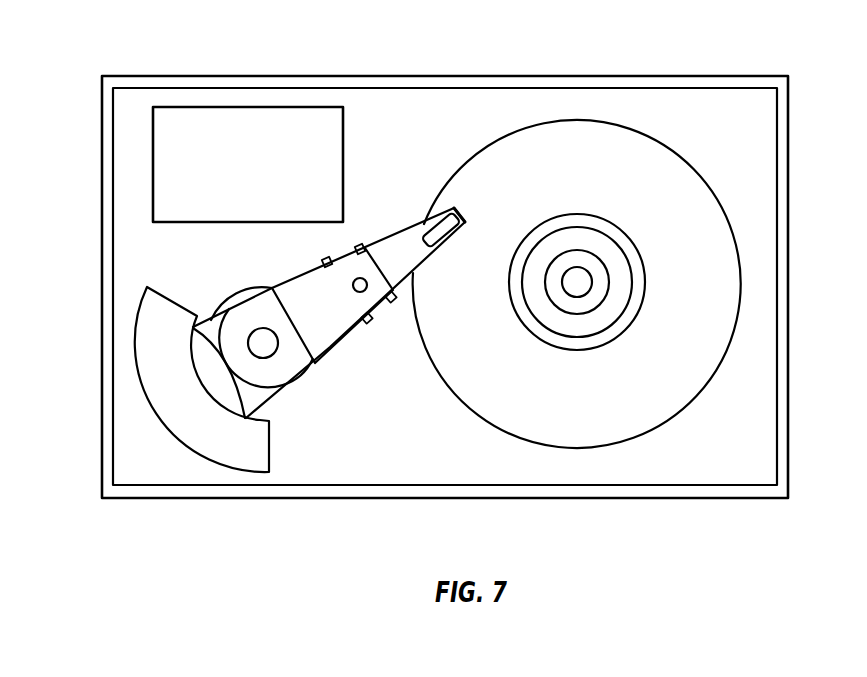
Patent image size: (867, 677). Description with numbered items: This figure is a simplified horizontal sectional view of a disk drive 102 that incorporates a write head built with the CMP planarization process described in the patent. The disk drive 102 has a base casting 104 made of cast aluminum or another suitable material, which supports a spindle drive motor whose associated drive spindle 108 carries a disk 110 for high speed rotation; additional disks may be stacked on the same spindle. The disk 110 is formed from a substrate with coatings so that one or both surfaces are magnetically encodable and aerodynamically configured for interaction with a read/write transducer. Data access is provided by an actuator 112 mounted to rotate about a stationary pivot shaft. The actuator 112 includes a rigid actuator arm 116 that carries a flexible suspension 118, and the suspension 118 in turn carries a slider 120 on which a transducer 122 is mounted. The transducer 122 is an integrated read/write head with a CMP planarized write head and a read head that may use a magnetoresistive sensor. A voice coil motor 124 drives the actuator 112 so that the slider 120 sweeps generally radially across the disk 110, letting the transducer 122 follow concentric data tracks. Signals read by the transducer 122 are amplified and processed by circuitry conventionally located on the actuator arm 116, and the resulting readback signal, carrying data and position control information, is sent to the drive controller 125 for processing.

The disk drive 102 is at (130, 44).
The base casting 104 is at (422, 75).
The drive spindle 108 is at (577, 297).
The disk 110 is at (713, 248).
The actuator 112 is at (287, 376).
The actuator arm 116 is at (343, 332).
The suspension 118 is at (370, 235).
The slider 120 is at (450, 231).
The transducer 122 is at (465, 211).
The voice coil motor 124 is at (183, 448).
The drive controller 125 is at (345, 158).